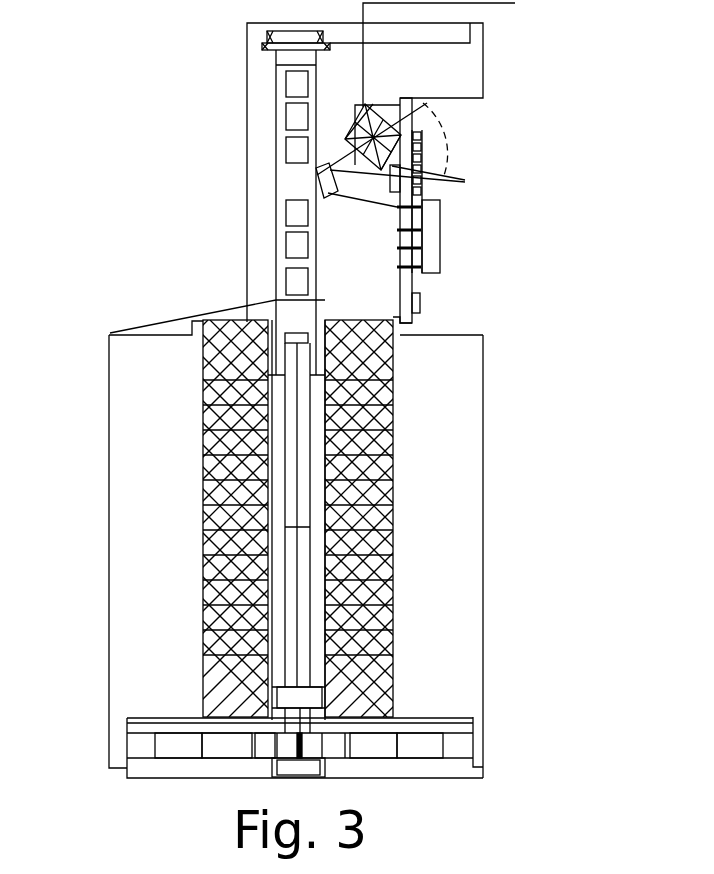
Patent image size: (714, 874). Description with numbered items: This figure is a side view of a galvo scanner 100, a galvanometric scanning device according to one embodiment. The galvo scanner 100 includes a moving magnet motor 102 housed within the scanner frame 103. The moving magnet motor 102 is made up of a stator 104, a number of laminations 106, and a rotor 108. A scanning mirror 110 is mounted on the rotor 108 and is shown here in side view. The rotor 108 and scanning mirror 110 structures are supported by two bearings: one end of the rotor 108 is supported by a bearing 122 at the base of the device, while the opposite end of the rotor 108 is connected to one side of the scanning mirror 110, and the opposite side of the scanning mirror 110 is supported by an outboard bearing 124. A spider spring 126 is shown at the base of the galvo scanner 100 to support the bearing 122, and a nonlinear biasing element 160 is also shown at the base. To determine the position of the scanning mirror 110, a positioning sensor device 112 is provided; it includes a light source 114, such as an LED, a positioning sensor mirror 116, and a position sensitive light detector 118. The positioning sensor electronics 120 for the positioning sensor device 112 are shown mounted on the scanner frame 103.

The galvo scanner 100 is at (357, 407).
The moving magnet motor 102 is at (148, 675).
The scanner frame 103 is at (483, 433).
The stator 104 is at (202, 355).
The laminations 106 is at (203, 500).
The rotor 108 is at (325, 708).
The scanning mirror 110 is at (276, 112).
The positioning sensor device 112 is at (446, 271).
The light source 114 is at (462, 53).
The positioning sensor mirror 116 is at (440, 220).
The position sensitive light detector 118 is at (413, 155).
The positioning sensor electronics 120 is at (412, 324).
The bearing 122 is at (272, 768).
The outboard bearing 124 is at (267, 35).
The spider spring 126 is at (139, 767).
The nonlinear biasing element 160 is at (460, 741).